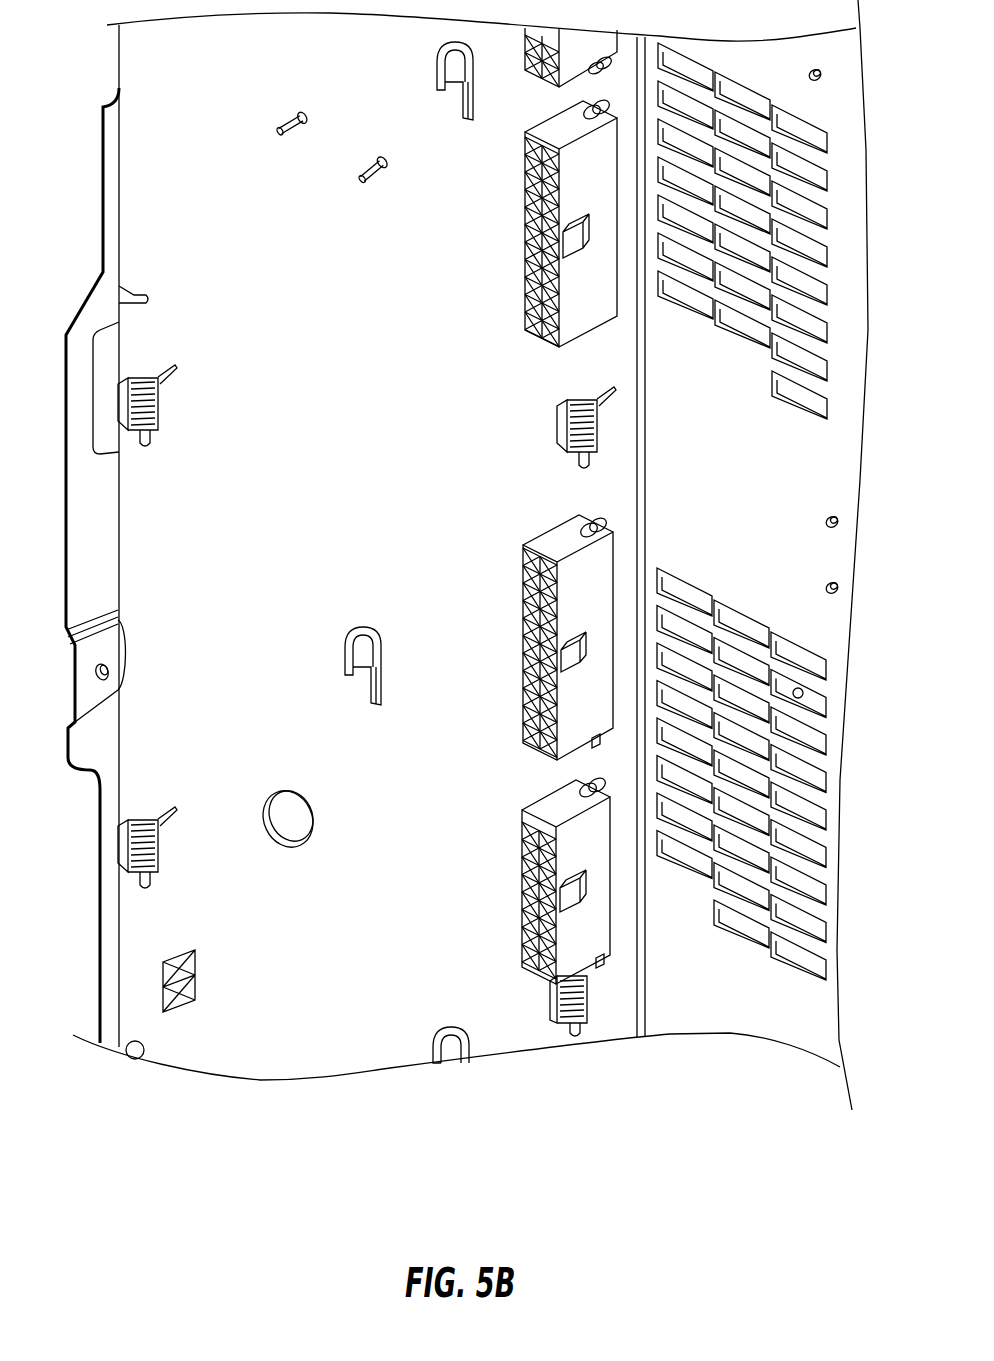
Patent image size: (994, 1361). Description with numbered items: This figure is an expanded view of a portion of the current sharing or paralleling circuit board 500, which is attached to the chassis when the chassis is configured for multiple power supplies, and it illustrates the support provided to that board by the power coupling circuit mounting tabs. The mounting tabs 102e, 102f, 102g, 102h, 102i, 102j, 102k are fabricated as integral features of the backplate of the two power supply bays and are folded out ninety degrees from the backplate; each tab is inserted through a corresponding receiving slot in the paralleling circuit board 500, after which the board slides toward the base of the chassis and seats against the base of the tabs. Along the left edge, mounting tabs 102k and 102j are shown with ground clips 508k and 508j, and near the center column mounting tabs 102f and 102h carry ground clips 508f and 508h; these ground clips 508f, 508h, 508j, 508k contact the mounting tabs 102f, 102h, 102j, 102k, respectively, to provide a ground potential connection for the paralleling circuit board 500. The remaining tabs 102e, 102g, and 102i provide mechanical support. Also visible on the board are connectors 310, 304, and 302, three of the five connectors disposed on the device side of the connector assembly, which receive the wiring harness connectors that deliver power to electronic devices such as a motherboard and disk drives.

The paralleling circuit board 500 is at (247, 1047).
The connector 302 is at (588, 837).
The connector 304 is at (580, 573).
The connector 310 is at (585, 305).
The mounting tab 102e is at (437, 62).
The mounting tab 102f is at (557, 422).
The mounting tab 102g is at (355, 630).
The mounting tab 102h is at (550, 995).
The mounting tab 102i is at (452, 1047).
The mounting tab 102j is at (128, 820).
The mounting tab 102k is at (130, 374).
The ground clip 508f is at (578, 447).
The ground clip 508h is at (582, 1040).
The ground clip 508j is at (145, 862).
The ground clip 508k is at (145, 427).